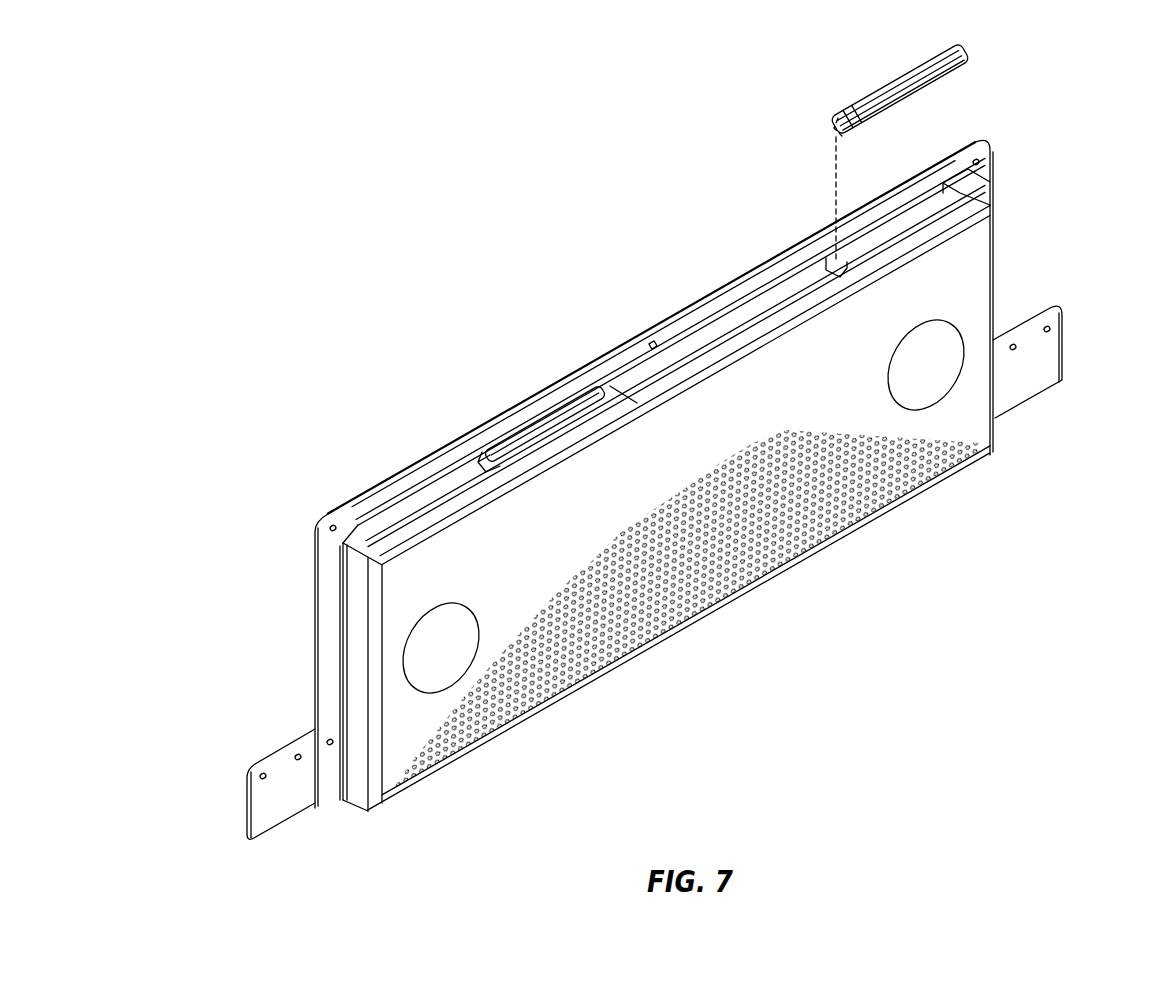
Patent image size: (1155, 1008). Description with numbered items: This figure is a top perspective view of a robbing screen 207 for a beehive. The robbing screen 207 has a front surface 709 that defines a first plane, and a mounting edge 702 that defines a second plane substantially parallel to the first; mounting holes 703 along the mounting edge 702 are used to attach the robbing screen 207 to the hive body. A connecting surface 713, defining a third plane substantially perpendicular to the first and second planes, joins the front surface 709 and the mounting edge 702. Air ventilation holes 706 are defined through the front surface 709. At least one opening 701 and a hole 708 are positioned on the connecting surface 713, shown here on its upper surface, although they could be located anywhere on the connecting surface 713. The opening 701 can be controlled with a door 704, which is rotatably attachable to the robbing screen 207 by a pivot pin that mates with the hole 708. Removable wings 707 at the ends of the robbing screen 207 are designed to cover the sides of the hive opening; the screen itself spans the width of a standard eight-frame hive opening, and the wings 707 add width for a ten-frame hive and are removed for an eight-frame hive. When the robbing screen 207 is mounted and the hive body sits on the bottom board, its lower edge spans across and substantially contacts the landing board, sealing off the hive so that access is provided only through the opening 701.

The robbing screen 207 is at (1006, 246).
The opening 701 is at (918, 213).
The mounting edge 702 is at (717, 310).
The mounting holes 703 is at (655, 345).
The door 704 is at (960, 57).
The air ventilation holes 706 is at (700, 575).
The removeable wings 707 is at (1033, 378).
The hole 708 is at (834, 270).
The front surface 709 is at (408, 583).
The connecting surface 713 is at (650, 372).